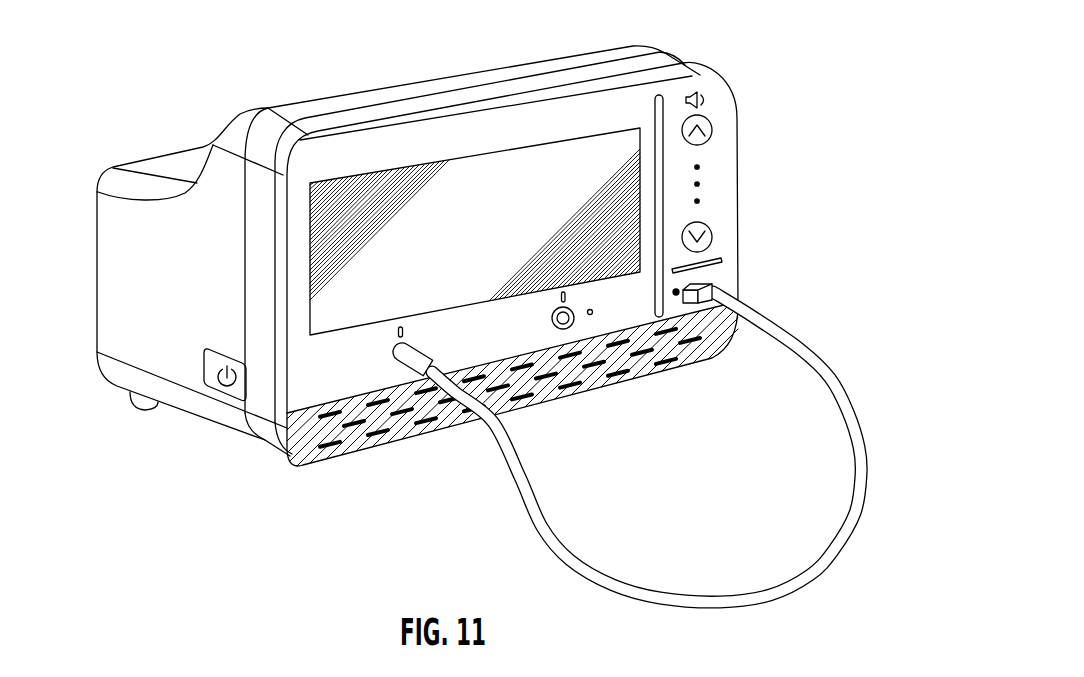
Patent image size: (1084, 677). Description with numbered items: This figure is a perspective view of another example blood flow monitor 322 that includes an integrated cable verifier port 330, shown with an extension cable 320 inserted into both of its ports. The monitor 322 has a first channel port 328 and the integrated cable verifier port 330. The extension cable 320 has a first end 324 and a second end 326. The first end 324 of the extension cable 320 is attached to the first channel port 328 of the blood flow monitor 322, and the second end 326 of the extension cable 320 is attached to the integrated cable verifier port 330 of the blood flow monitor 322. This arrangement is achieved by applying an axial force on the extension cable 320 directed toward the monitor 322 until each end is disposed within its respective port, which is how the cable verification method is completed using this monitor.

The extension cable 320 is at (833, 370).
The blood flow monitor 322 is at (703, 40).
The first end 324 is at (386, 358).
The second end 326 is at (715, 282).
The first channel port 328 is at (412, 340).
The integrated cable verifier port 330 is at (676, 293).